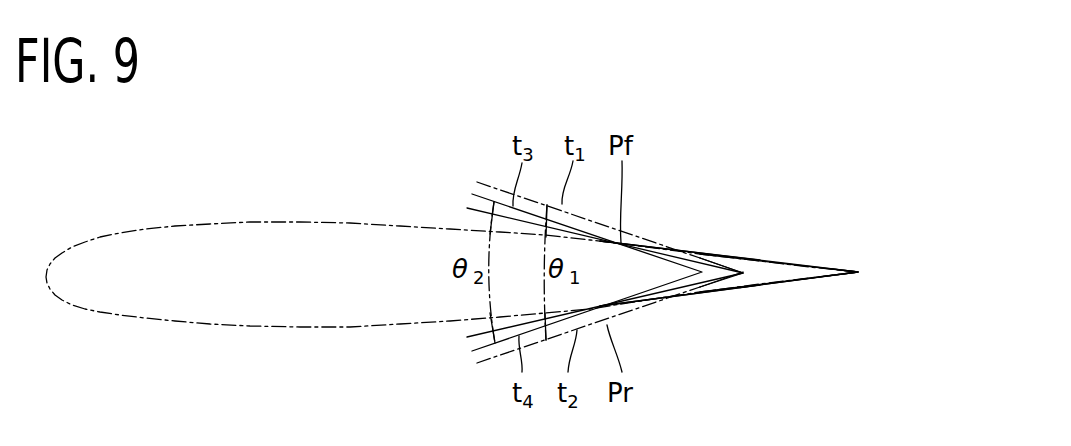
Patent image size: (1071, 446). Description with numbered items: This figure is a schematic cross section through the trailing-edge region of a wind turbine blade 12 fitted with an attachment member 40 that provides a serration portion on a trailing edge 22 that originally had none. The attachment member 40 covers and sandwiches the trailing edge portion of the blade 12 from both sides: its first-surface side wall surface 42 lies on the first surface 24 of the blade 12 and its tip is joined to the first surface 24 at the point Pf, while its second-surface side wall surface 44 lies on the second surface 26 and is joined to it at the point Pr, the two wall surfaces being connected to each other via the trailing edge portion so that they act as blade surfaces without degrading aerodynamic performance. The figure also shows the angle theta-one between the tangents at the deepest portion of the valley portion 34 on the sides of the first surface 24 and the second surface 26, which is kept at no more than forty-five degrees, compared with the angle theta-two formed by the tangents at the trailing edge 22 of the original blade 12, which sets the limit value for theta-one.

The wind turbine blade 12 is at (377, 223).
The trailing edge 22 is at (712, 285).
The first surface 24 is at (679, 252).
The second surface 26 is at (680, 302).
The valley portion 34 is at (748, 272).
The attachment member 40 is at (763, 242).
The first-surface side wall surface 42 is at (813, 263).
The second-surface side wall surface 44 is at (762, 287).